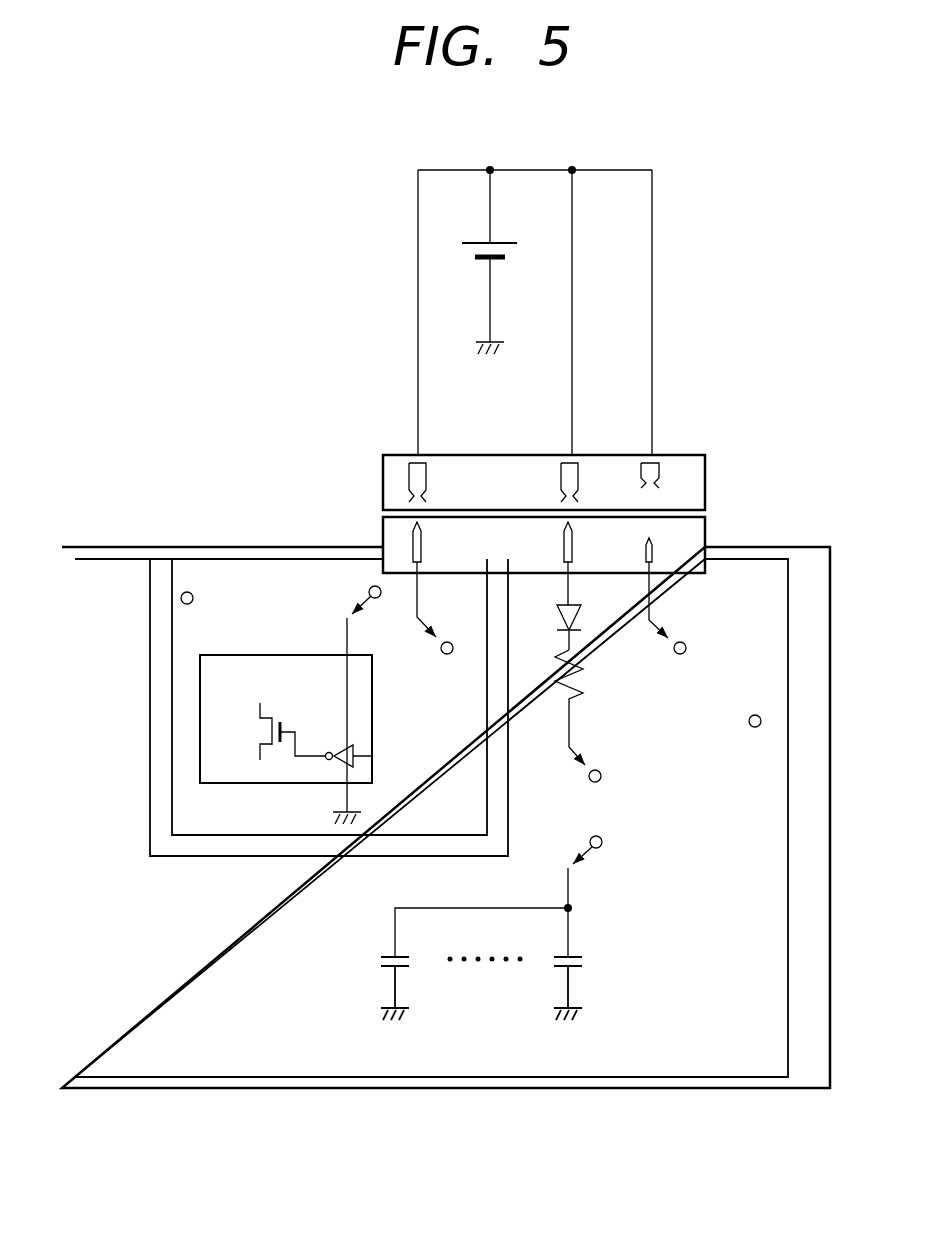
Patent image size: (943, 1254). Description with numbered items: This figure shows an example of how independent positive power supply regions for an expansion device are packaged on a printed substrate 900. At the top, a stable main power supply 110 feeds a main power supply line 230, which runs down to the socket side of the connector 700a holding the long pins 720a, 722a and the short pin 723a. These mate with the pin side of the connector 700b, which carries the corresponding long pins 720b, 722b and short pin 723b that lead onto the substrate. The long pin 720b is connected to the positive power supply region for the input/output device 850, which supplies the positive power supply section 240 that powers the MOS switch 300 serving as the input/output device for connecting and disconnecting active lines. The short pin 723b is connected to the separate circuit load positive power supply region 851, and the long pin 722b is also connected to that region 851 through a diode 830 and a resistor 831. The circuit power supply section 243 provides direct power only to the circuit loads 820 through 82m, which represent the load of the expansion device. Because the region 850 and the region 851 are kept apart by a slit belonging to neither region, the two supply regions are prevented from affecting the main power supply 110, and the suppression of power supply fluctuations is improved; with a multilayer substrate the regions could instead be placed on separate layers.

The main power supply 110 is at (504, 243).
The main power supply line 230 is at (468, 172).
The connector housing (socket side) 700a is at (500, 464).
The connector housing (pin side) 700b is at (500, 579).
The long pin 720a is at (426, 472).
The long pin 722a is at (578, 472).
The short pin 723a is at (659, 472).
The long pin 720b is at (420, 563).
The long pin 722b is at (572, 563).
The short pin 723b is at (652, 563).
The printed substrate 900 is at (140, 547).
The positive power supply region for the input/output device 850 is at (190, 592).
The circuit load positive power supply region 851 is at (761, 721).
The MOS switch 300 is at (250, 656).
The positive power supply section for the input/output device 240 is at (345, 636).
The diode 830 is at (582, 618).
The resistor 831 is at (578, 698).
The circuit power supply section 243 is at (568, 885).
The circuit load 82m is at (383, 967).
The circuit load 820 is at (556, 967).